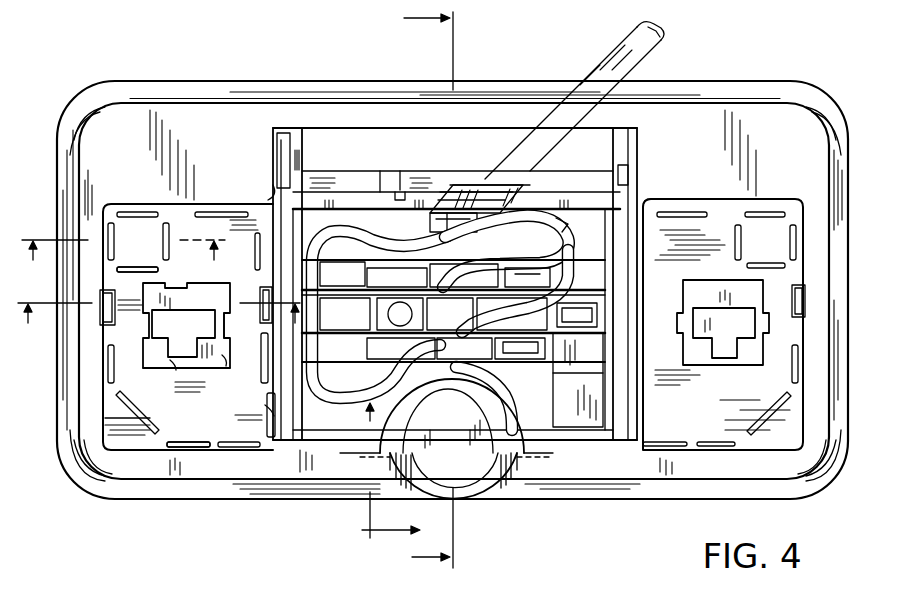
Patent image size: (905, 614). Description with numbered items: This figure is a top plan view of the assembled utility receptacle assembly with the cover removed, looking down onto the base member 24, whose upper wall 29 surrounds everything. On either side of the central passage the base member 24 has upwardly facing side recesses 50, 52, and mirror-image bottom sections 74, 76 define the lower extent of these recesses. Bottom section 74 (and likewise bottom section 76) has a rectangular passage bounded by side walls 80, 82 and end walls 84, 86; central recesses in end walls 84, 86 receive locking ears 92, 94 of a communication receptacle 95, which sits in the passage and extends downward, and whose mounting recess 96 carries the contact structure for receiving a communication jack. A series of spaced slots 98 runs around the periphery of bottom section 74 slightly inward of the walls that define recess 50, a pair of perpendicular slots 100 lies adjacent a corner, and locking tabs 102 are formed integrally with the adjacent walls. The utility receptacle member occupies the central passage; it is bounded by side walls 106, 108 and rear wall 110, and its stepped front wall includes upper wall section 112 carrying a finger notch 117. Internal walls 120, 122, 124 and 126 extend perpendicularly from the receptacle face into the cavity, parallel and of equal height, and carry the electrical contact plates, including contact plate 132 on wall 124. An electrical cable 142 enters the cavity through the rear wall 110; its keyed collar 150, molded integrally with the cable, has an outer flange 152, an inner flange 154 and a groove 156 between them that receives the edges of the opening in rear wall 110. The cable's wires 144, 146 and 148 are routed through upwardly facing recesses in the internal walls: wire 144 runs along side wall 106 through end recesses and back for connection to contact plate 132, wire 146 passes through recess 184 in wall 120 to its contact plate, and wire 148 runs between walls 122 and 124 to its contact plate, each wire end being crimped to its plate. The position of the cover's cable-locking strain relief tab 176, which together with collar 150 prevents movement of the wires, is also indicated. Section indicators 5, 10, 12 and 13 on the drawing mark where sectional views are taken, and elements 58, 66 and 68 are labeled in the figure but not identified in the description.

The section line 5- 5 is at (438, 289).
The section line 10- 10 is at (420, 411).
The section line 12- 12 is at (158, 302).
The section line 13- 13 is at (124, 238).
The base member 24 is at (548, 501).
The upper wall 29 is at (766, 150).
The side recess 50 is at (110, 392).
The side recess 52 is at (783, 388).
The side rib 58 is at (273, 413).
The left wall of central module 66 is at (276, 165).
The right wall of central module 68 is at (626, 162).
The bottom section 74 is at (188, 417).
The bottom section 76 is at (700, 418).
The side wall 80 is at (176, 287).
The side wall 82 is at (172, 370).
The end wall 84 is at (153, 369).
The end wall 86 is at (222, 356).
The locking ear 92 is at (143, 322).
The locking ear 94 is at (226, 318).
The communication receptacle 95 is at (214, 374).
The mounting recess 96 is at (178, 337).
The spaced slots 98 is at (180, 446).
The perpendicular slots 100 is at (150, 267).
The locking tabs 102 is at (218, 327).
The side wall 106 is at (270, 201).
The side wall 108 is at (647, 204).
The rear wall 110 is at (455, 300).
The upper wall section 112 is at (405, 452).
The finger notch 117 is at (478, 408).
The internal wall 120 is at (376, 264).
The internal wall 122 is at (474, 300).
The internal wall 124 is at (363, 331).
The internal wall 126 is at (585, 185).
The electrical contact plate 132 is at (448, 337).
The electrical cable 142 is at (660, 42).
The wire 144 is at (340, 228).
The wire 146 is at (540, 222).
The wire 148 is at (560, 215).
The keyed collar 150 is at (480, 184).
The outer flange 152 is at (488, 184).
The inner flange 154 is at (430, 220).
The groove 156 is at (452, 210).
The cable-locking strain relief tab 176 is at (408, 188).
The recess 184 is at (458, 277).